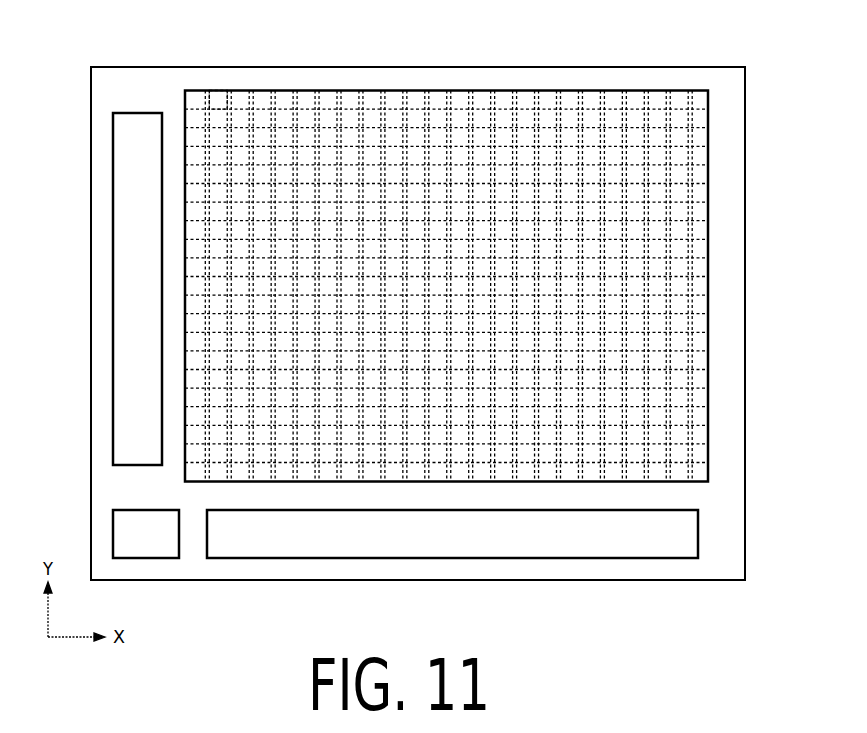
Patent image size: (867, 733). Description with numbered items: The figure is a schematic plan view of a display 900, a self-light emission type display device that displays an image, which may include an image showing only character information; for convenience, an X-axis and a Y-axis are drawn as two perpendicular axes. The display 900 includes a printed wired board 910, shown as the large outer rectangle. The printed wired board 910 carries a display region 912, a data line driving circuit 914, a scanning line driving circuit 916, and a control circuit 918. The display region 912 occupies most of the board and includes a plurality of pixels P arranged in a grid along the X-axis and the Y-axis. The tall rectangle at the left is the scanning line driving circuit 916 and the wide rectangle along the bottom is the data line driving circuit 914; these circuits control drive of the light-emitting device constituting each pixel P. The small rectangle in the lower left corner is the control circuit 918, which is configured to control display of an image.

The display 900 is at (708, 35).
The printed wired board 910 is at (568, 77).
The display region 912 is at (298, 90).
The data line driving circuit 914 is at (659, 550).
The scanning line driving circuit 916 is at (133, 195).
The control circuit 918 is at (154, 550).
The pixel P is at (221, 90).